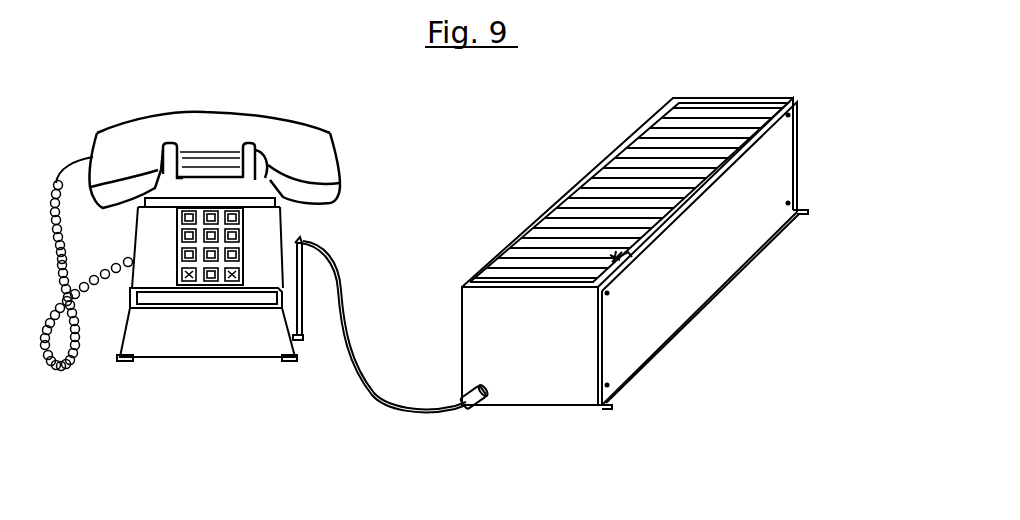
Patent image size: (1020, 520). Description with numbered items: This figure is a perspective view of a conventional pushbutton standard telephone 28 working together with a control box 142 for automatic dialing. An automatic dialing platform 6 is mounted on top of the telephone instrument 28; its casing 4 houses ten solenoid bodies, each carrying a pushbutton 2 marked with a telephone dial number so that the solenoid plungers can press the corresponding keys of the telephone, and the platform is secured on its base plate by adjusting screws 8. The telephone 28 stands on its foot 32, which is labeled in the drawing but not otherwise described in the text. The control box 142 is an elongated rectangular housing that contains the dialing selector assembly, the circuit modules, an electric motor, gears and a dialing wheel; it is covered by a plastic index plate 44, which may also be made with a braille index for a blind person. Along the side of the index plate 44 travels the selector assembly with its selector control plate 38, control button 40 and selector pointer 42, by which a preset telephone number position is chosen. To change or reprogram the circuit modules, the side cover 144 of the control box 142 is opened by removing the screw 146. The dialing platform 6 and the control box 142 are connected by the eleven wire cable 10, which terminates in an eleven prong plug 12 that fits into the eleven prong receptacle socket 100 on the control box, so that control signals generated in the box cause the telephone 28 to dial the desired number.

The pushbutton 2 is at (210, 280).
The casing 4 is at (240, 227).
The automatic dialing platform 6 is at (258, 278).
The adjusting screws 8 is at (298, 287).
The cable 10 is at (333, 268).
The eleven prong plug 12 is at (465, 402).
The pushbutton standard telephone 28 is at (228, 347).
The foot 32 is at (130, 360).
The selector control plate 38 is at (623, 253).
The control button 40 is at (625, 257).
The selector pointer 42 is at (612, 256).
The plastic index plate 44 is at (648, 155).
The eleven prong receptacle socket 100 is at (467, 402).
The control box 142 is at (493, 303).
The side cover 144 is at (782, 176).
The screw 146 is at (610, 385).